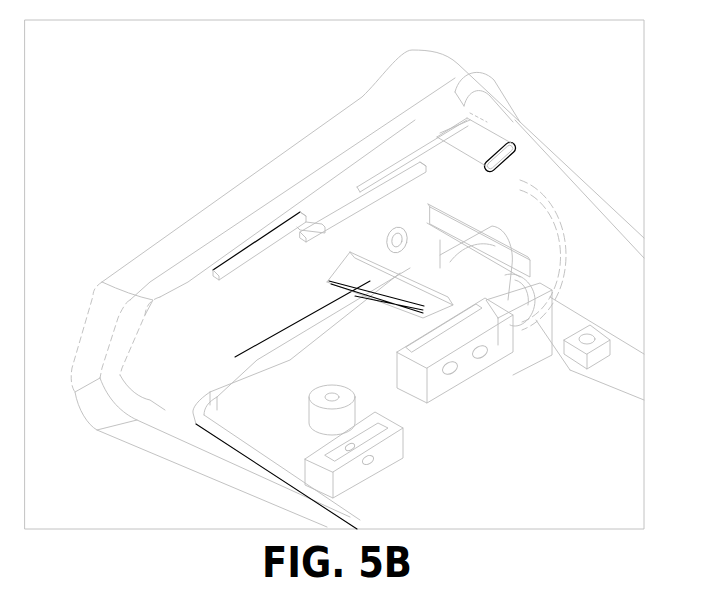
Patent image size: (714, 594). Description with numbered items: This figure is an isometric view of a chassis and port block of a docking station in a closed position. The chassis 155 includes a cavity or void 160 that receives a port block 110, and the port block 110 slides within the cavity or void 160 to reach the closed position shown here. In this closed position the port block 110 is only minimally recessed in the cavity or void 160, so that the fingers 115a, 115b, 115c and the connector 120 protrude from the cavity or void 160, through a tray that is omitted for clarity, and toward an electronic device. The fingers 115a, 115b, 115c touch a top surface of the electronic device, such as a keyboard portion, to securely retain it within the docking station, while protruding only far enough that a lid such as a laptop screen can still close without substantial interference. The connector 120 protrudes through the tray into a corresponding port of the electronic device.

The port block 110 is at (207, 325).
The cavity or void 160 is at (195, 393).
The finger 115a is at (262, 268).
The finger 115b is at (352, 203).
The finger 115c is at (410, 160).
The connector 120 is at (485, 138).
The chassis 155 is at (490, 93).